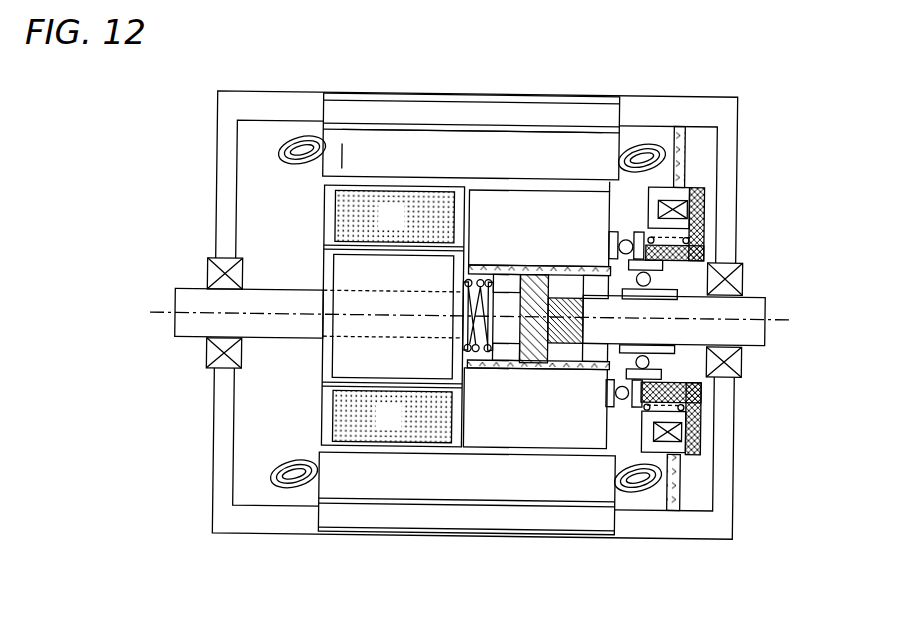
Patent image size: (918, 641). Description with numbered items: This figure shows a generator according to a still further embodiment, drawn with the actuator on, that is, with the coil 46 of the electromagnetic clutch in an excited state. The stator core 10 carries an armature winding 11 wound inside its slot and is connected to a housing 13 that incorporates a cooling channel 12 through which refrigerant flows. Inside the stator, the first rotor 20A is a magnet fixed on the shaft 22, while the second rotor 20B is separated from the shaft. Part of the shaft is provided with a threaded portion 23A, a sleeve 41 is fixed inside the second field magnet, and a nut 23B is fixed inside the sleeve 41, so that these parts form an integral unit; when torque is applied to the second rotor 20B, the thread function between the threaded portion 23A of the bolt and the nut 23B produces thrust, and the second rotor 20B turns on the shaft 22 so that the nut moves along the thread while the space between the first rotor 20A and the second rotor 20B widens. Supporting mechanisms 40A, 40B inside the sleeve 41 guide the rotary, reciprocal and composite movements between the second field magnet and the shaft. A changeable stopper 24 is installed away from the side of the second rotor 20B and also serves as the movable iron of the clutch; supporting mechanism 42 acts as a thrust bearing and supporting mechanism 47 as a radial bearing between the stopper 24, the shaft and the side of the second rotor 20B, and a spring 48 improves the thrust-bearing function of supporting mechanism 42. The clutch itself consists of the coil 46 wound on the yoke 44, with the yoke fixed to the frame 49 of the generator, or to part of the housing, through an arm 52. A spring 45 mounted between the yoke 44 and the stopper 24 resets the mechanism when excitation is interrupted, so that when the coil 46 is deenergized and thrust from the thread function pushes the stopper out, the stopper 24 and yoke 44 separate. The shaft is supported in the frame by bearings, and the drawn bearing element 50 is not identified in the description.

The stator core 10 is at (342, 151).
The armature winding 11 is at (283, 140).
The cooling channel 12 is at (400, 129).
The housing 13 is at (430, 97).
The first rotor 20A is at (322, 215).
The second rotor 20B is at (483, 187).
The shaft 22 is at (183, 344).
The threaded portion 23A is at (567, 296).
The nut 23B is at (532, 289).
The stopper 24 is at (700, 187).
The supporting mechanism 40A is at (505, 361).
The supporting mechanism 40B is at (593, 361).
The sleeve 41 is at (513, 266).
The supporting mechanism 42 is at (612, 380).
The yoke 44 is at (660, 191).
The spring 45 is at (705, 247).
The coil 46 is at (675, 203).
The supporting mechanism 47 is at (650, 363).
The spring 48 is at (480, 352).
The frame 49 is at (216, 143).
The bearing 50 is at (215, 375).
The arm 52 is at (680, 477).